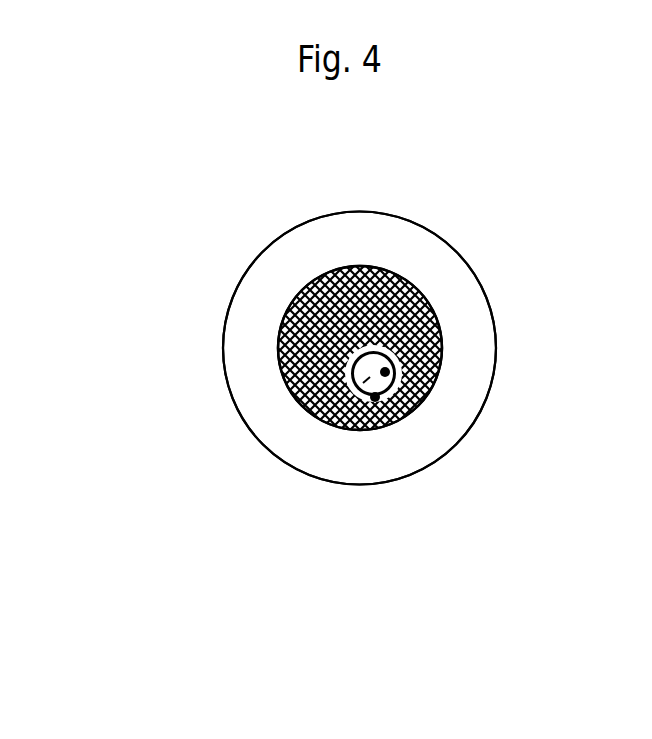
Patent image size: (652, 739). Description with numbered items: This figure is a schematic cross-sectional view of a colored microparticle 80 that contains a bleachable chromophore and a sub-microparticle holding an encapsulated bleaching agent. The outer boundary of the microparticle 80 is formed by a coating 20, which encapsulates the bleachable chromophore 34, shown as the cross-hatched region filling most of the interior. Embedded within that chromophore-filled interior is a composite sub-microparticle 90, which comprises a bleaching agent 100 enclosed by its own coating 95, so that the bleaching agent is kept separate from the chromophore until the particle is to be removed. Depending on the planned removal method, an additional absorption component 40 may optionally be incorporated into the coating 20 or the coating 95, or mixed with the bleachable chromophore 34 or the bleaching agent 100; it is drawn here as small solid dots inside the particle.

The coating 20 is at (372, 458).
The microparticle 80 is at (250, 270).
The bleachable chromophore 34 is at (337, 317).
The bleaching agent 100 is at (327, 420).
The coating 95 is at (397, 349).
The composite sub-microparticle 90 is at (440, 363).
The absorption component 40 is at (388, 374).